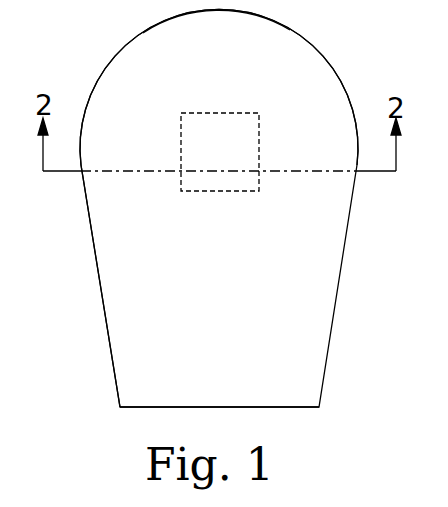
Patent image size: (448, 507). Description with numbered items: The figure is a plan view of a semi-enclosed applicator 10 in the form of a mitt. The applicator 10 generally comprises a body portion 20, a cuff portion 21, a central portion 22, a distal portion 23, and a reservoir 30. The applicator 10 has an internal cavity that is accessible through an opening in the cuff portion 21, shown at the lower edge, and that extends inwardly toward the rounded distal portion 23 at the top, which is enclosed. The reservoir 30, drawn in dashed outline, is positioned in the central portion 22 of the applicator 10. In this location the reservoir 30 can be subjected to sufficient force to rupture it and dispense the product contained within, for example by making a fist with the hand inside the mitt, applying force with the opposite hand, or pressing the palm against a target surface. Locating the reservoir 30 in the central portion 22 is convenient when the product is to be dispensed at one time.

The applicator 10 is at (364, 307).
The body portion 20 is at (125, 334).
The cuff portion 21 is at (280, 385).
The central portion 22 is at (306, 80).
The distal portion 23 is at (170, 37).
The reservoir 30 is at (215, 155).